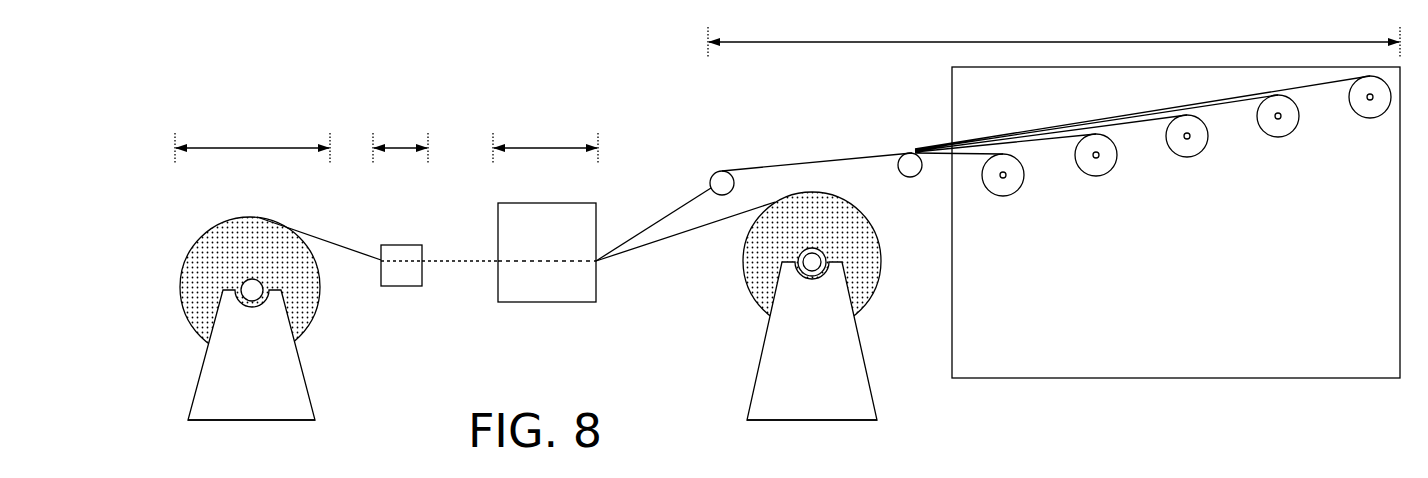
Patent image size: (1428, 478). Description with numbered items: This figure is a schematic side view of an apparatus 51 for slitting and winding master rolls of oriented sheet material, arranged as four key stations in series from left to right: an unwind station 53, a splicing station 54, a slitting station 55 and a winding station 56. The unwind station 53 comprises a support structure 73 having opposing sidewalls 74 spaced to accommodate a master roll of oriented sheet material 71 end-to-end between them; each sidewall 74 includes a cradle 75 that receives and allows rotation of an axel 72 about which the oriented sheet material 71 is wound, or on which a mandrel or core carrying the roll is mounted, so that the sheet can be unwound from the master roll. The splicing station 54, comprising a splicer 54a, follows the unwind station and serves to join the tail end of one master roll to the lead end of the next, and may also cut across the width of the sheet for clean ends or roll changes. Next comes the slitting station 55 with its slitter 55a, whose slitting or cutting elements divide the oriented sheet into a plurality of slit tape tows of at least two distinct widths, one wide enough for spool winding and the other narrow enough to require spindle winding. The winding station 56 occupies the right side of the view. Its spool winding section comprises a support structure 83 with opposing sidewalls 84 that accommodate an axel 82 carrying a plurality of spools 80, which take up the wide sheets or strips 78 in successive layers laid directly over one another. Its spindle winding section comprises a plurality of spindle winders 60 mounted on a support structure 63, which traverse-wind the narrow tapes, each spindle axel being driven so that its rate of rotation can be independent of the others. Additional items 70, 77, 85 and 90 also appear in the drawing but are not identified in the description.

The apparatus 51 is at (618, 90).
The unwind station 53 is at (252, 137).
The splicing station 54 is at (400, 137).
The slitting station 55 is at (545, 137).
The winding station 56 is at (1054, 35).
The splicer 54a is at (400, 280).
The slitter 55a is at (552, 296).
The spindle winders 60 is at (1093, 174).
The support structure 63 is at (1206, 247).
The guide rollers 70 is at (722, 172).
The master roll of oriented sheet material 71 is at (312, 322).
The axel 72 is at (248, 282).
The support structure 73 is at (305, 405).
The sidewalls 74 is at (228, 366).
The cradle 75 is at (266, 294).
The fiber 77 is at (453, 262).
The wide sheets or strips 78 is at (655, 247).
The spools 80 is at (855, 218).
The axel 82 is at (826, 258).
The support structure 83 is at (757, 400).
The sidewalls 84 is at (850, 355).
The shaft 85 is at (812, 276).
The winding line 90 is at (798, 258).